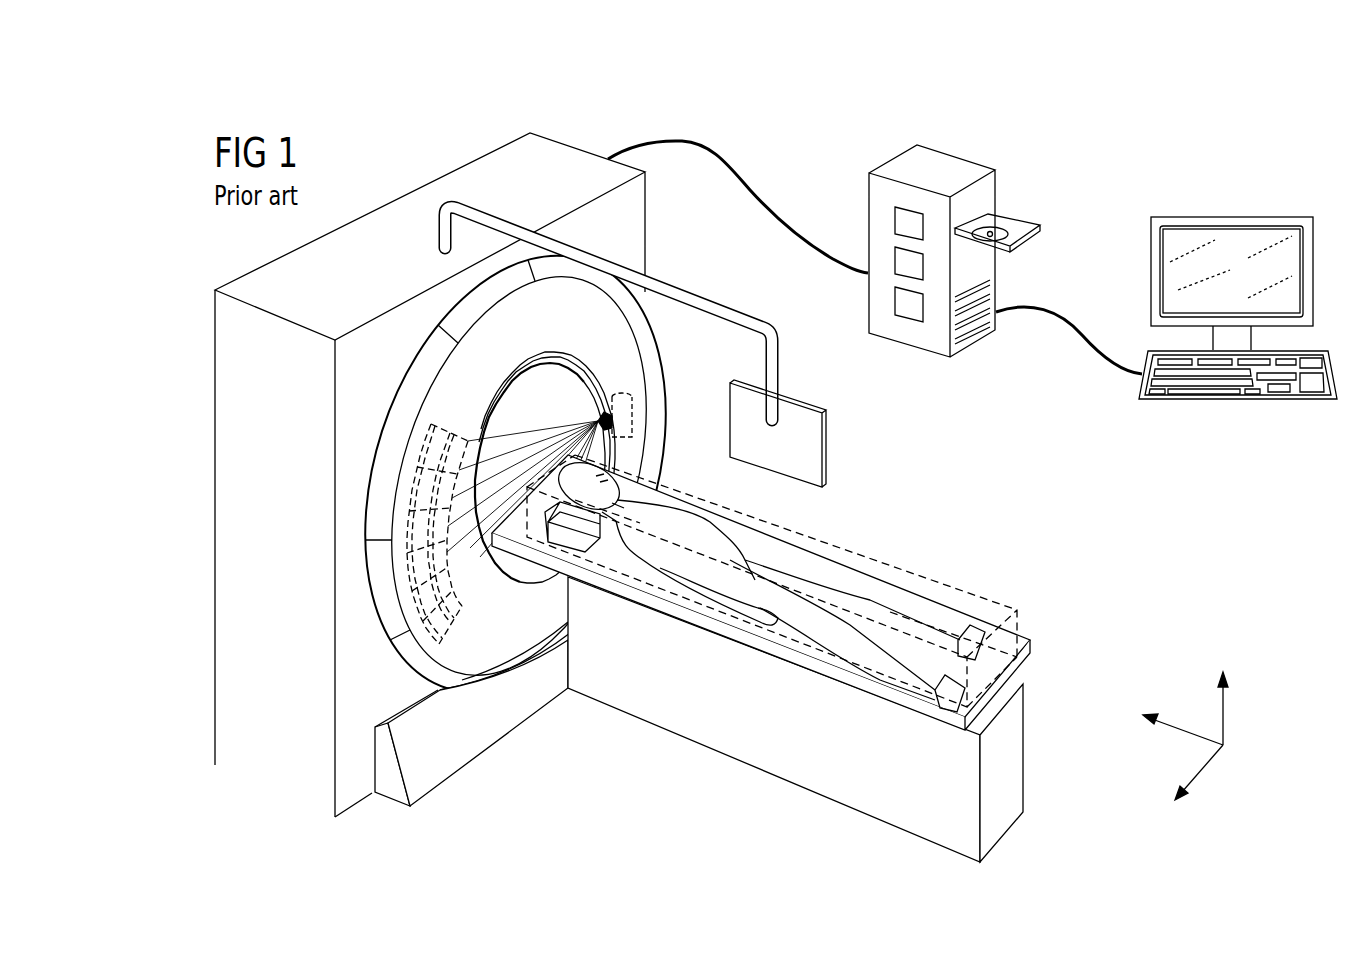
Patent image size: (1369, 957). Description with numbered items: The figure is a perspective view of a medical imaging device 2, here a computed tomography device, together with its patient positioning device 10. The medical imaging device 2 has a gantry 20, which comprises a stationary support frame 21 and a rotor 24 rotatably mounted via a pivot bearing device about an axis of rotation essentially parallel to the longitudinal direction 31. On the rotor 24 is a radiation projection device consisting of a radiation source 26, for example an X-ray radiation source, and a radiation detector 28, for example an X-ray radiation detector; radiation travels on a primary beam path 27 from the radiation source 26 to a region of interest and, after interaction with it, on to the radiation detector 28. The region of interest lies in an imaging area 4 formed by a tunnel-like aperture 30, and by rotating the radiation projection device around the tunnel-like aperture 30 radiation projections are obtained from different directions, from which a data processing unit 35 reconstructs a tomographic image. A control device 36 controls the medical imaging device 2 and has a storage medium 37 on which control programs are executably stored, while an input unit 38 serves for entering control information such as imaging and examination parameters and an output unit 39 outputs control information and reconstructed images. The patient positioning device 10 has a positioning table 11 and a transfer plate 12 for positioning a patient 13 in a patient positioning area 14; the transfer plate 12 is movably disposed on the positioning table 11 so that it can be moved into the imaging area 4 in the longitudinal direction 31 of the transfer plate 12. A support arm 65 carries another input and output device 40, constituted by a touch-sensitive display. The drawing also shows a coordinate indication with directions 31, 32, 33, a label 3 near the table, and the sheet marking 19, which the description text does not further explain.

The medical imaging device 2 is at (219, 273).
The computer system 3 is at (1070, 339).
The imaging area 4 is at (538, 465).
The tunnel-like aperture 30 is at (495, 428).
The patient positioning device 10 is at (801, 658).
The positioning table 11 is at (855, 790).
The transfer plate 12 is at (1032, 662).
The patient 13 is at (835, 592).
The patient positioning area 14 is at (949, 600).
The sheet number 19 is at (561, 810).
The gantry 20 is at (208, 612).
The stationary support frame 21 is at (267, 770).
The rotor 24 is at (636, 358).
The radiation source 26 is at (636, 416).
The primary beam path 27 is at (553, 432).
The radiation detector 28 is at (450, 624).
The longitudinal direction 31 is at (1167, 722).
The y axis 32 is at (1196, 780).
The z axis 33 is at (1226, 700).
The data processing unit 35 is at (896, 223).
The control device 36 is at (950, 163).
The storage medium 37 is at (1012, 225).
The input unit 38 is at (1143, 385).
The output unit 39 is at (1151, 276).
The input and output device 40 is at (805, 433).
The support arm 65 is at (697, 303).